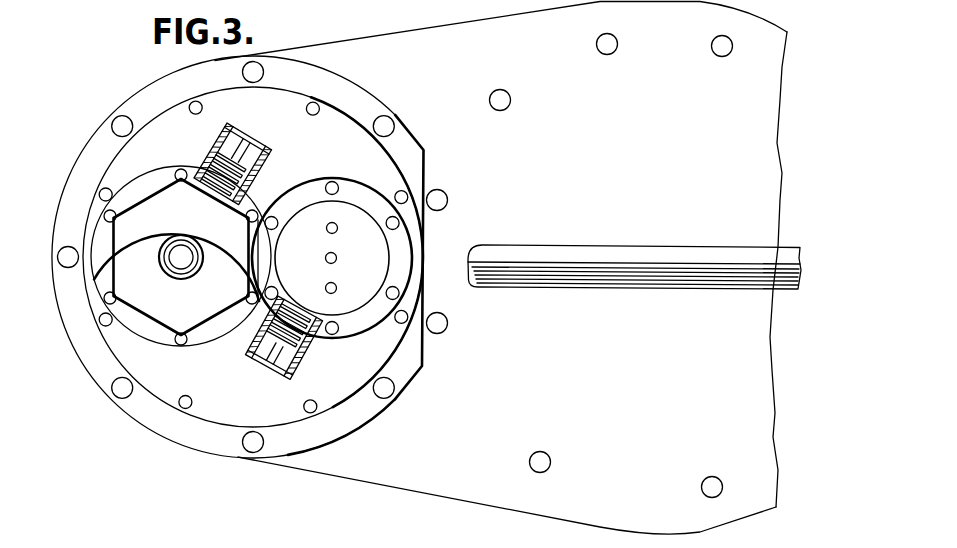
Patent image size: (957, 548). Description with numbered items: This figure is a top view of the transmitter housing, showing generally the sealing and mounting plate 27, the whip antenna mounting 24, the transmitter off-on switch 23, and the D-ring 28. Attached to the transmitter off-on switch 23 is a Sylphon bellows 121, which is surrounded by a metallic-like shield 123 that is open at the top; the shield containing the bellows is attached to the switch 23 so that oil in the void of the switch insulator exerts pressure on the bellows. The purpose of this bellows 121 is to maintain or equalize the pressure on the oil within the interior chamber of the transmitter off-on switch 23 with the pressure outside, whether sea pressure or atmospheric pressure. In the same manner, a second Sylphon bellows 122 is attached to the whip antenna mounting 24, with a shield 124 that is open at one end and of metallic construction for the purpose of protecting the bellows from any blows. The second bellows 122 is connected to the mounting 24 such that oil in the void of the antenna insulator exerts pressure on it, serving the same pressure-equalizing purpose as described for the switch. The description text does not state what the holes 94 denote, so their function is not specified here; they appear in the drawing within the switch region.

The transmitter off-on switch 23 is at (397, 275).
The whip antenna mounting 24 is at (110, 270).
The sealing and mounting plate 27 is at (160, 423).
The D-ring 28 is at (546, 250).
The holes 94 is at (337, 285).
The Sylphon bellows 121 is at (298, 360).
The second Sylphon bellows 122 is at (216, 170).
The shield 123 is at (252, 352).
The shield 124 is at (263, 170).